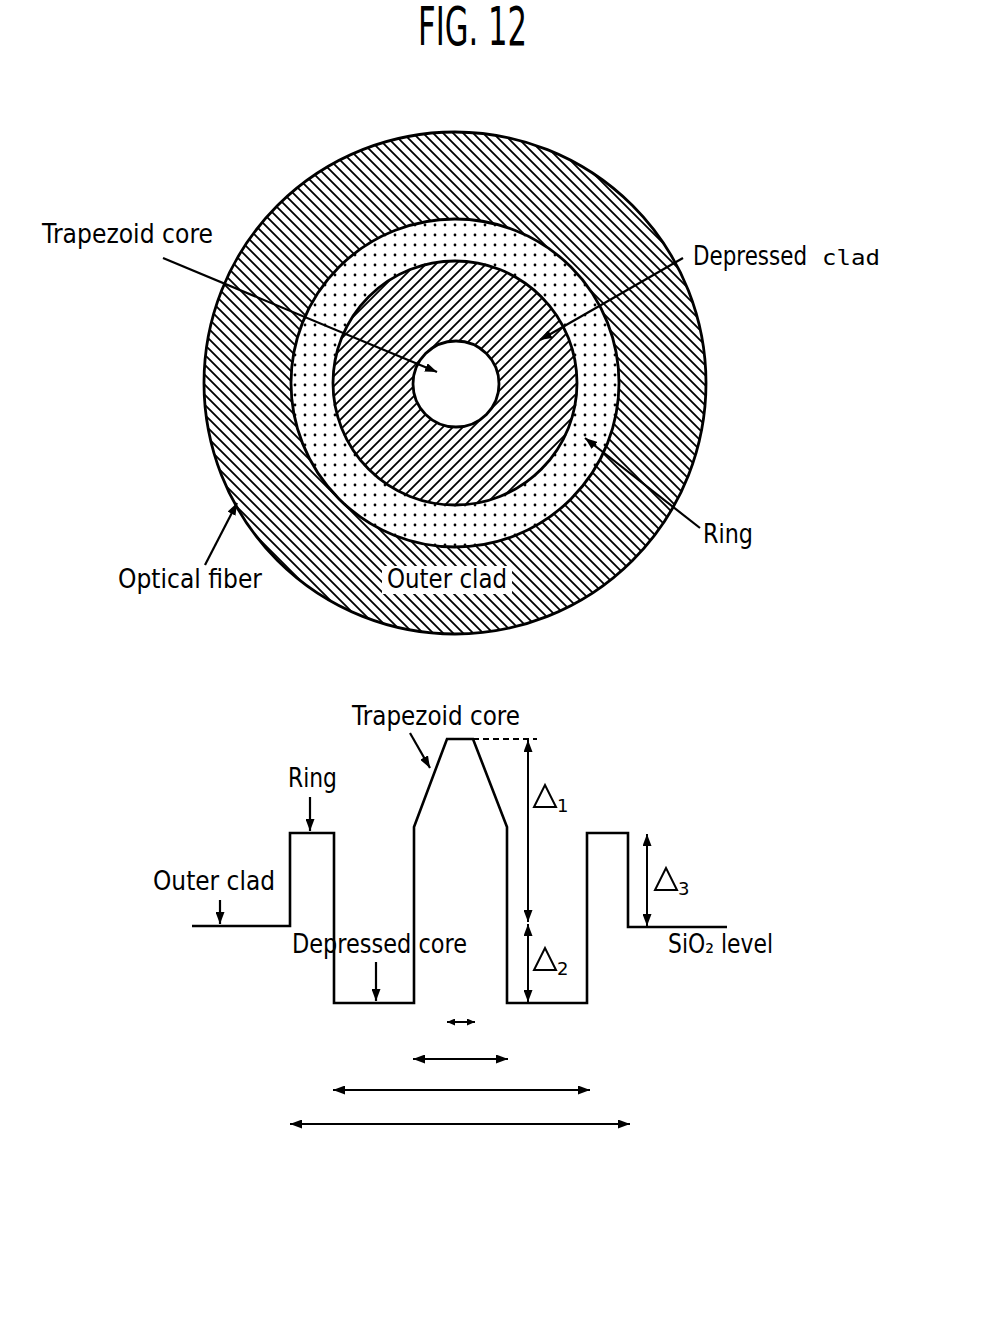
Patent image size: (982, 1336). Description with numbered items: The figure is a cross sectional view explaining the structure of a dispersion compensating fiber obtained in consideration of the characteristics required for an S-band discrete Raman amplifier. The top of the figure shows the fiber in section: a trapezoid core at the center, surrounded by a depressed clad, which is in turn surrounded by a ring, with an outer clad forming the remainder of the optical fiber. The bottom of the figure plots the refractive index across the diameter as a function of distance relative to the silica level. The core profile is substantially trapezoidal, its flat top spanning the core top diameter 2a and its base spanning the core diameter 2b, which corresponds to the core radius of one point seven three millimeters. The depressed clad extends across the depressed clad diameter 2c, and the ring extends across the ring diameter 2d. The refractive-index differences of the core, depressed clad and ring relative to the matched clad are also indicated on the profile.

The trapezoid core top diameter 2a is at (461, 1003).
The core diameter 2b is at (460, 1043).
The depressed clad diameter 2c is at (461, 1076).
The ring diameter 2d is at (460, 1108).